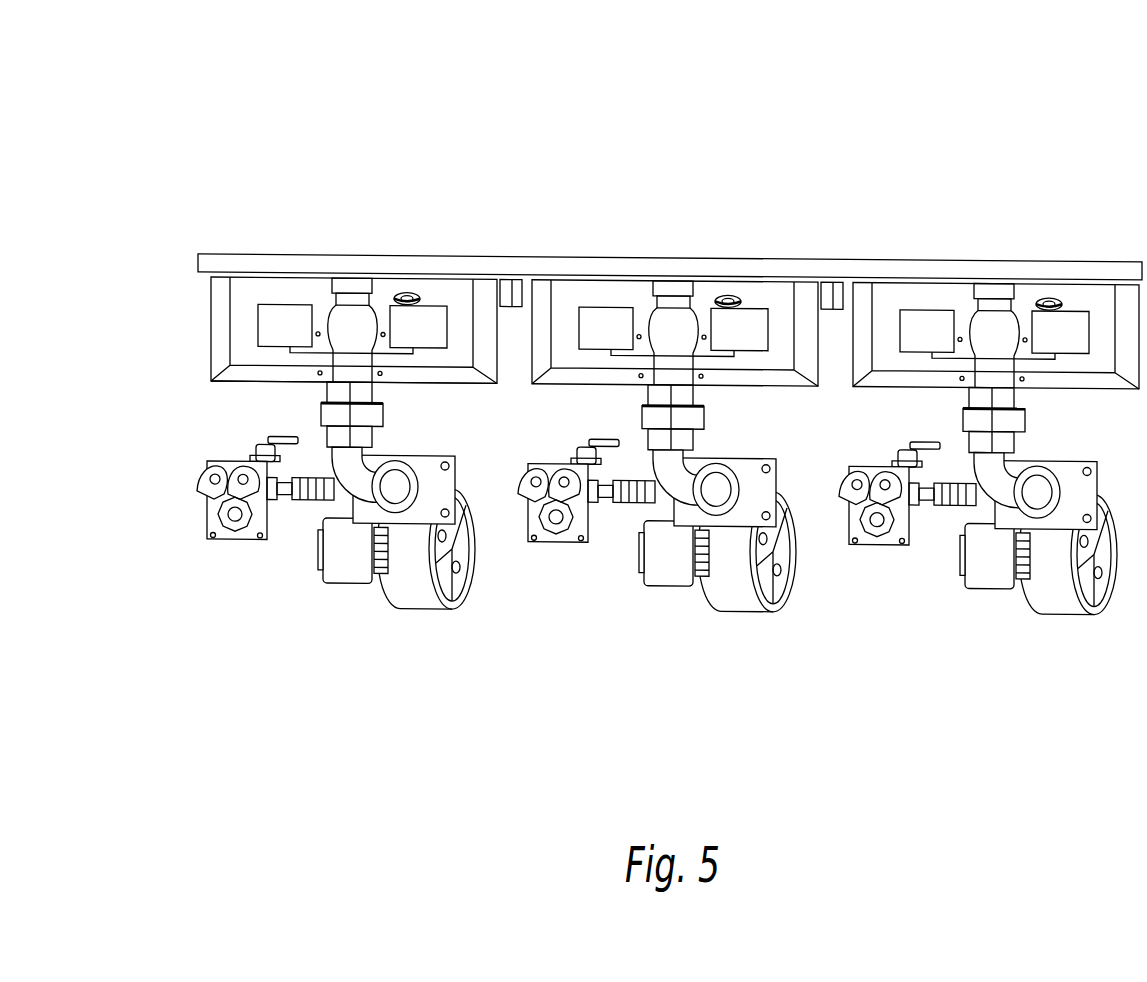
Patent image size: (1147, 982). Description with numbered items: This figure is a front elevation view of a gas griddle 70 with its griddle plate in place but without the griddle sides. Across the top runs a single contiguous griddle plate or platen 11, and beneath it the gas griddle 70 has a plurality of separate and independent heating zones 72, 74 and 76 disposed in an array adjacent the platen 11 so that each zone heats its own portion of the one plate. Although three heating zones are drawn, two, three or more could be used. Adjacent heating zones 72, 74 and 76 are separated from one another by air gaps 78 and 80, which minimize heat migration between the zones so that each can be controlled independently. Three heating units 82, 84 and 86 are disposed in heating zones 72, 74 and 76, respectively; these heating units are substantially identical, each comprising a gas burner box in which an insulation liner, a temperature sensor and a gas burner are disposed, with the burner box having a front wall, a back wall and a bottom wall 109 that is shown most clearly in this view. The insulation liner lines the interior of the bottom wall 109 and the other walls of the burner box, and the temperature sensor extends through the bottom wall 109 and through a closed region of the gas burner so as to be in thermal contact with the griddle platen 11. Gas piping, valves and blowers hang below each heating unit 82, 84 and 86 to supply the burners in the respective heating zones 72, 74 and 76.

The griddle plate or platen 11 is at (903, 247).
The gas griddle 70 is at (390, 196).
The heating unit 82 is at (227, 200).
The heating unit 84 is at (578, 200).
The heating unit 86 is at (1095, 210).
The heating zone 72 is at (320, 613).
The heating zone 74 is at (670, 590).
The heating zone 76 is at (976, 626).
The air gap 78 is at (510, 368).
The air gap 80 is at (833, 360).
The bottom wall 109 is at (248, 385).